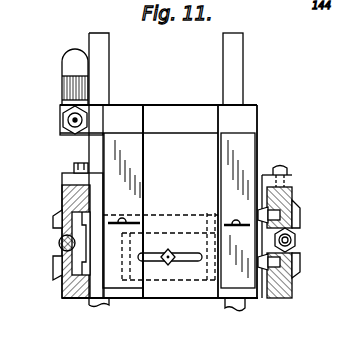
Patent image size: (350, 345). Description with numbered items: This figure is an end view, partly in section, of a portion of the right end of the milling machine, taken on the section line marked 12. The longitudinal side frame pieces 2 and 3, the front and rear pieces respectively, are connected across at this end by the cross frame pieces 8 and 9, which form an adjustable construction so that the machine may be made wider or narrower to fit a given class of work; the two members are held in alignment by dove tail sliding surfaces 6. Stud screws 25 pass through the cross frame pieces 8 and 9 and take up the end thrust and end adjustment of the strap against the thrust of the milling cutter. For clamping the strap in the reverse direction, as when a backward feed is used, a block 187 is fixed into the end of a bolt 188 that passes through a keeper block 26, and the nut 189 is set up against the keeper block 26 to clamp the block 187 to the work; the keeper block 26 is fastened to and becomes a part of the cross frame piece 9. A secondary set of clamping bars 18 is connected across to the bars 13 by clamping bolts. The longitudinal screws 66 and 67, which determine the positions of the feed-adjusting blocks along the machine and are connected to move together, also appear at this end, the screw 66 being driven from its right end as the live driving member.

The longitudinal side frame piece 2 is at (61, 202).
The longitudinal side frame piece 3 is at (293, 200).
The dove tail sliding surfaces 6 is at (218, 300).
The cross frame piece 8 is at (288, 186).
The cross frame piece 9 is at (120, 298).
The section line 12 is at (183, 90).
The bars 13 is at (102, 50).
The clamping bars 18 is at (236, 63).
The stud screws 25 is at (221, 216).
The keeper block 26 is at (61, 114).
The longitudinal screw 66 is at (58, 243).
The longitudinal screw 67 is at (296, 242).
The block 187 is at (63, 52).
The bolt 188 is at (62, 136).
The nut 189 is at (90, 118).